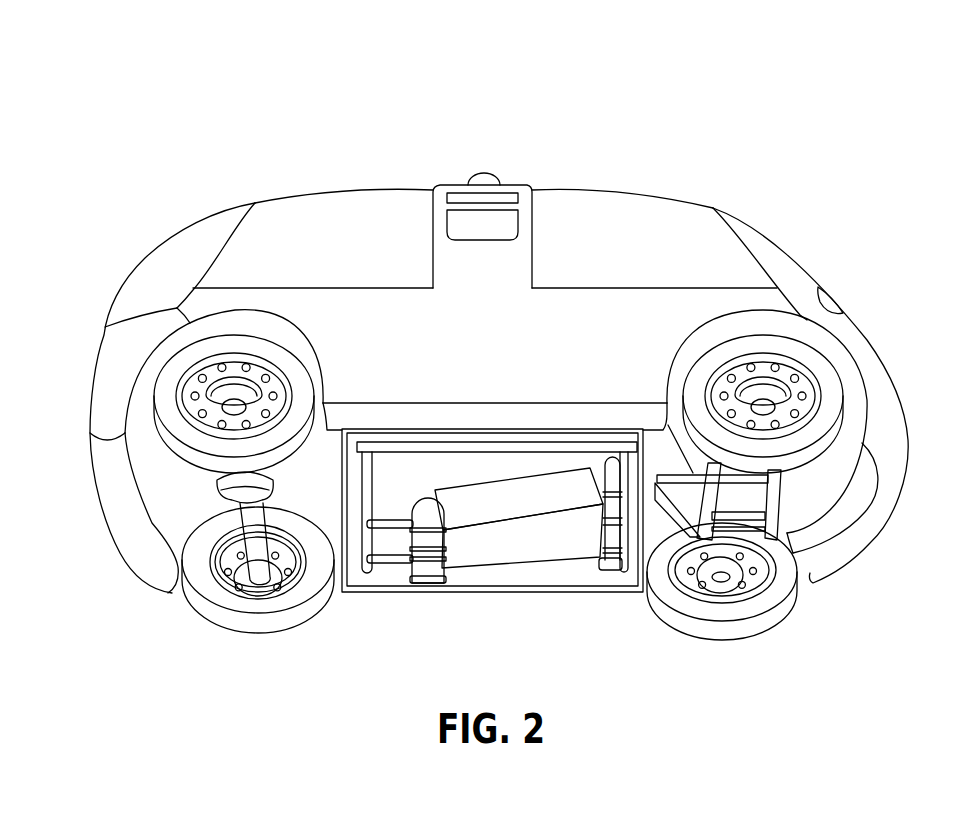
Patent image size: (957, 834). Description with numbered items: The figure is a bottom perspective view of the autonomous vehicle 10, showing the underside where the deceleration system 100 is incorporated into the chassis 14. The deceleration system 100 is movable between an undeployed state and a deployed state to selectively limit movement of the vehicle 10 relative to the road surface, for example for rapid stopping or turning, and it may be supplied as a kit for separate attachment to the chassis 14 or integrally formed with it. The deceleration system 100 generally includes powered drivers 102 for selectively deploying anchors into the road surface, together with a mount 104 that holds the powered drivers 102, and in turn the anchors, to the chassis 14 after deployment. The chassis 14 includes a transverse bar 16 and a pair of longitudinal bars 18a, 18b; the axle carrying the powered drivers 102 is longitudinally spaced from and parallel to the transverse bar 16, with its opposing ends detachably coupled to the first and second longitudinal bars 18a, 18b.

The autonomous vehicle 10 is at (155, 78).
The chassis 14 is at (607, 572).
The transverse bar 16 is at (612, 476).
The first longitudinal bar 18a is at (402, 559).
The second longitudinal bar 18b is at (393, 447).
The deceleration system 100 is at (568, 553).
The powered drivers 102 is at (433, 512).
The mount 104 is at (522, 553).